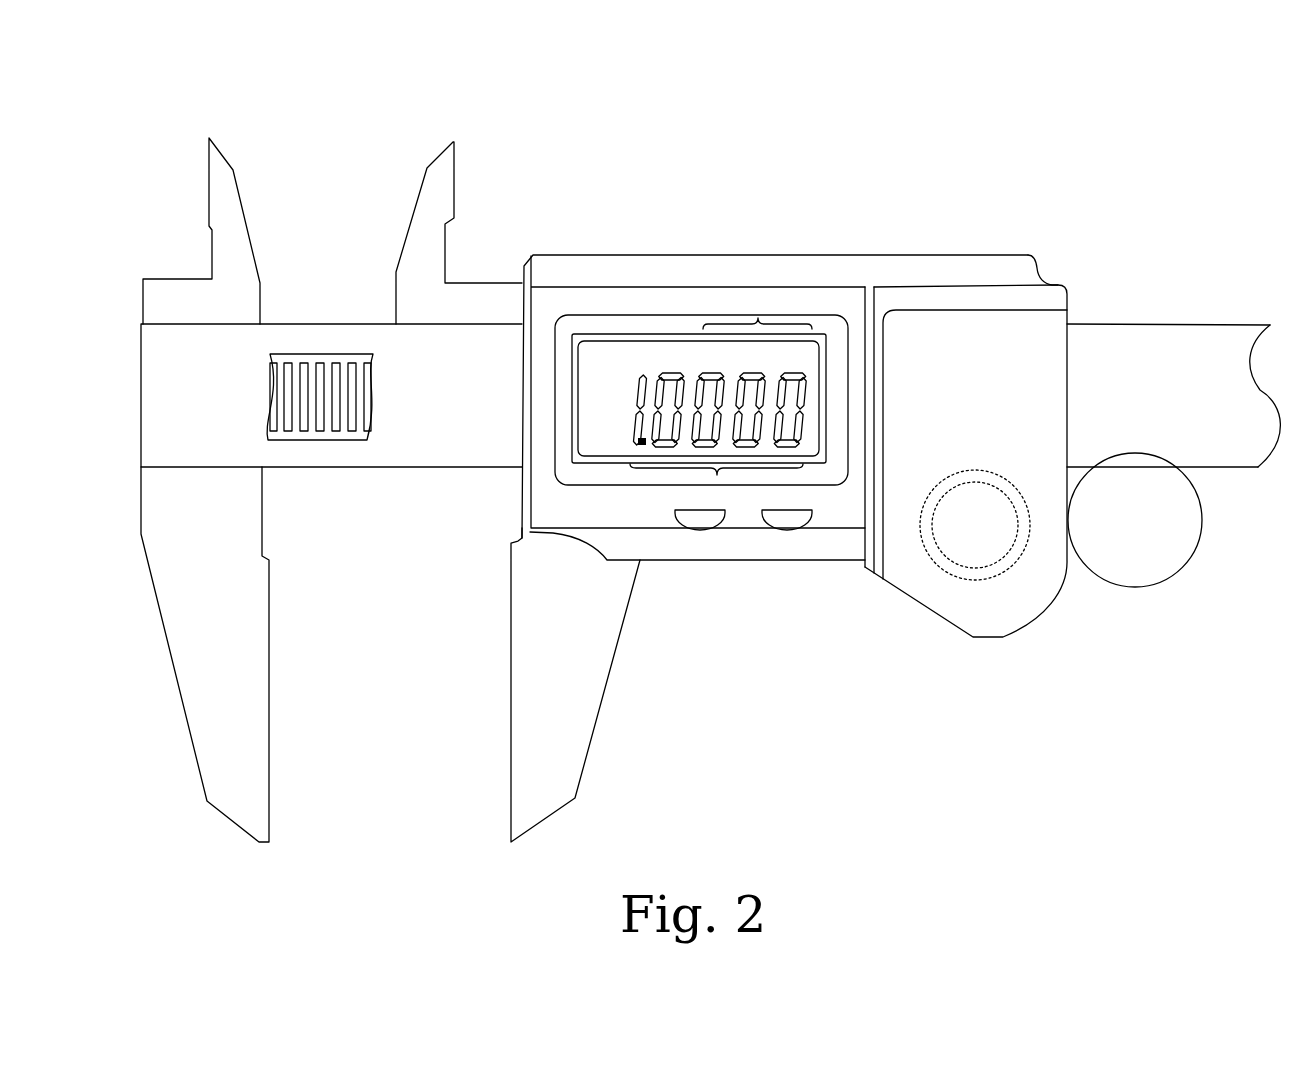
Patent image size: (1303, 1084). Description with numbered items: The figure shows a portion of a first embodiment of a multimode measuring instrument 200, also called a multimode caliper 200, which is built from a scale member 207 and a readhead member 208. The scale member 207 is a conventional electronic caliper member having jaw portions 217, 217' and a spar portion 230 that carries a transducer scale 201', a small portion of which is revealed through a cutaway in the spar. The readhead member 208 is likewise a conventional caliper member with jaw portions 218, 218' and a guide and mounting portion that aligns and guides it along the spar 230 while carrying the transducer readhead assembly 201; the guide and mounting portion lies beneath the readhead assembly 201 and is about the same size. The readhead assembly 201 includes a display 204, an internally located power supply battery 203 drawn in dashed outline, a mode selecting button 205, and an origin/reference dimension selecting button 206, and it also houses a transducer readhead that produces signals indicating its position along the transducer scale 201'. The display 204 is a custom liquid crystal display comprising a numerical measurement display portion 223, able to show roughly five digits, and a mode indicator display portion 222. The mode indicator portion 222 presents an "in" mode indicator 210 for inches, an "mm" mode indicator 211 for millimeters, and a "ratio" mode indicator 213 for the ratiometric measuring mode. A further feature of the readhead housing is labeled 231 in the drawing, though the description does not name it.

The multimode measuring instrument 200 is at (1158, 156).
The readhead assembly 201 is at (828, 472).
The transducer scale 201' is at (327, 436).
The power supply battery 203 is at (975, 470).
The display 204 is at (555, 393).
The mode selecting button 205 is at (697, 530).
The origin/reference dimension selecting button 206 is at (783, 530).
The scale member 207 is at (360, 214).
The readhead member 208 is at (462, 778).
The "in" mode indicator 210 is at (686, 362).
The "mm" mode indicator 211 is at (746, 338).
The "ratio" mode indicator 213 is at (788, 338).
The jaw portion 217 is at (241, 654).
The jaw portion 217' is at (234, 231).
The jaw portion 218 is at (539, 685).
The jaw portion 218' is at (463, 231).
The mode indicator display portion 222 is at (760, 320).
The numerical measurement display portion 223 is at (631, 470).
The spar portion 230 is at (140, 395).
The housing top edge 231 is at (897, 255).